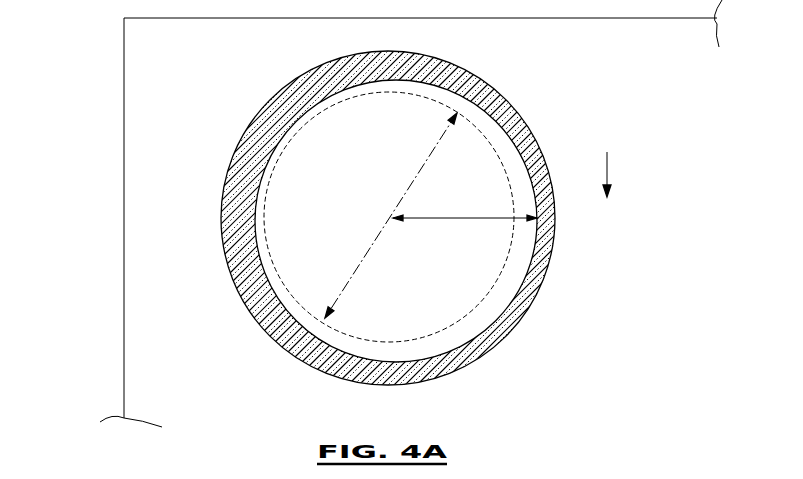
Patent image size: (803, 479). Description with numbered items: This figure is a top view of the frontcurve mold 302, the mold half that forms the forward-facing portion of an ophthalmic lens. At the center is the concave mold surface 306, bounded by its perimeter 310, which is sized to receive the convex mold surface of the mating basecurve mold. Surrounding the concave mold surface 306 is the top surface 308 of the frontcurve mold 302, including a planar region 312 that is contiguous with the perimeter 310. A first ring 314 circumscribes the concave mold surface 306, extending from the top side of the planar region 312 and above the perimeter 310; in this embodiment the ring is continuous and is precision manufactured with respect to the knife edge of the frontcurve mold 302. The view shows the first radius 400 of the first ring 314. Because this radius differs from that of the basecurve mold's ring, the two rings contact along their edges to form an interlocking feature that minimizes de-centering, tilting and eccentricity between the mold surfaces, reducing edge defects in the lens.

The frontcurve mold 302 is at (188, 56).
The concave mold surface 306 is at (393, 140).
The top surface 308 is at (603, 164).
The perimeter 310 is at (391, 215).
The planar region 312 is at (497, 313).
The first ring 314 is at (232, 262).
The first radius 400 is at (465, 208).